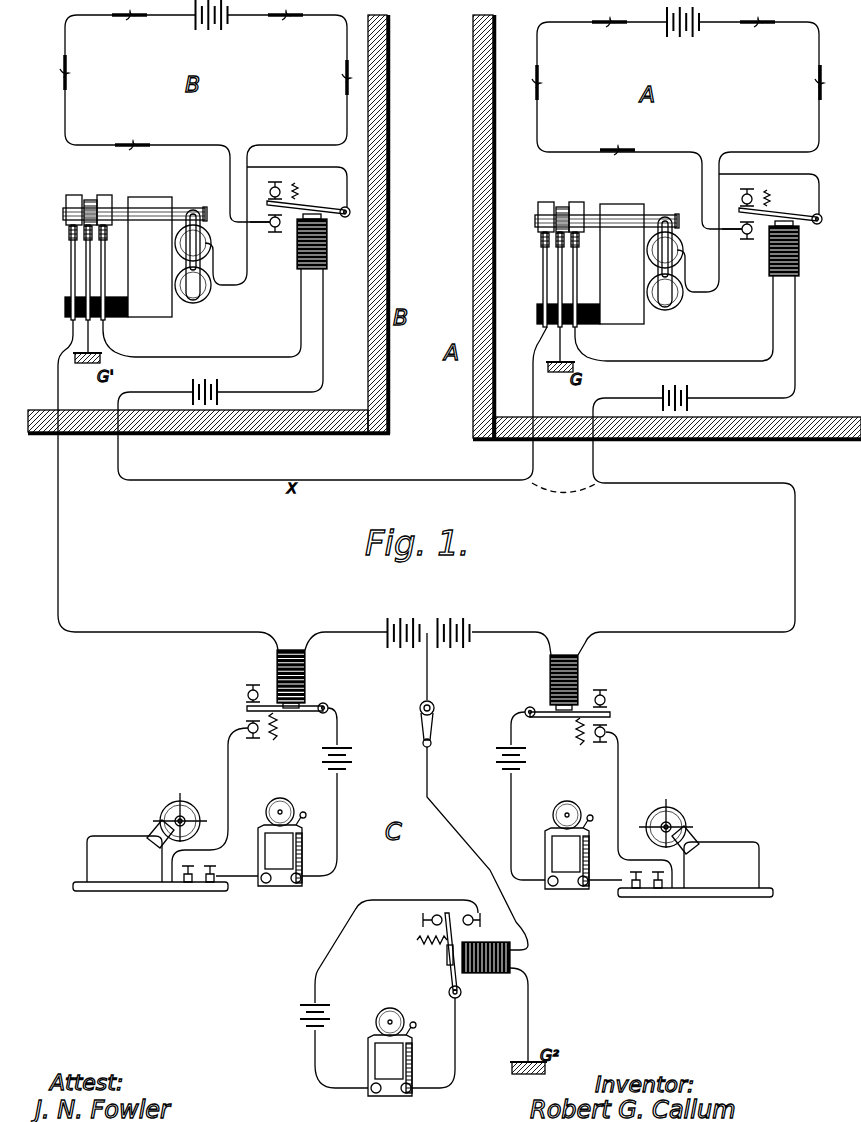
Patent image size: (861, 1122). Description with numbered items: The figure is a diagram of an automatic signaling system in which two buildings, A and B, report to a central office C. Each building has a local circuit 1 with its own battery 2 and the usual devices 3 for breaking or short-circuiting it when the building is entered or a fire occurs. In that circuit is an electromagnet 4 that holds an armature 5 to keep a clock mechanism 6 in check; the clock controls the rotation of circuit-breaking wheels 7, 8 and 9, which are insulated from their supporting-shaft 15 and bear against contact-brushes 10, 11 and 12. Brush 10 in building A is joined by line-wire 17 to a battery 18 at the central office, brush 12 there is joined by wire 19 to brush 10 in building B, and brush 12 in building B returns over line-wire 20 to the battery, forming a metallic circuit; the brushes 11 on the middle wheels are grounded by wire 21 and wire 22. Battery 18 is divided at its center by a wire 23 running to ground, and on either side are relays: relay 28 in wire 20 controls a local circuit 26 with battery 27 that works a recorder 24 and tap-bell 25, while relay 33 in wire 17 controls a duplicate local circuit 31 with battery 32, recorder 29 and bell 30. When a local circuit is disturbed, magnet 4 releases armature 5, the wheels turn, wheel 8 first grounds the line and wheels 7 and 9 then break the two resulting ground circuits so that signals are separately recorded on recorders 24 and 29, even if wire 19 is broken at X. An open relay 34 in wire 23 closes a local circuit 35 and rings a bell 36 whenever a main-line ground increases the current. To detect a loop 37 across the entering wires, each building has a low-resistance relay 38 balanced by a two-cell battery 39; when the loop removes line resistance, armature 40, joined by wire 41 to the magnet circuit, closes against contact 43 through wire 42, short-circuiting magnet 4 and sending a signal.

The local circuit 1 is at (442, 153).
The battery 2 is at (448, 31).
The devices for short-circuiting or breaking the circuit 3 is at (442, 77).
The electromagnet 4 is at (432, 258).
The armature 5 is at (193, 300).
The clock mechanism 6 is at (354, 260).
The circuit-breaking wheel 7 is at (105, 195).
The circuit-breaking wheel 8 is at (90, 200).
The circuit-breaking wheel 9 is at (77, 195).
The contact-brush 10 is at (101, 257).
The contact-brush 11 is at (86, 274).
The contact-brush 12 is at (71, 288).
The supporting-shaft 15 is at (63, 214).
The line-wire 17 is at (633, 465).
The battery 18 is at (429, 622).
The wire 19 is at (537, 393).
The line-wire 20 is at (58, 390).
The wire 21 is at (562, 348).
The wire 22 is at (90, 336).
The wire 23 is at (432, 678).
The recorder 24 is at (150, 842).
The single tap-bell 25 is at (282, 830).
The local circuit 26 is at (244, 897).
The battery 27 is at (349, 760).
The relay 28 is at (289, 695).
The recorder 29 is at (695, 848).
The bell 30 is at (569, 835).
The local circuit 31 is at (511, 800).
The battery 32 is at (523, 758).
The relay 33 is at (566, 700).
The open relay 34 is at (505, 975).
The local circuit 35 is at (336, 955).
The bell 36 is at (392, 1041).
The loop 37 is at (564, 481).
The relay 38 is at (563, 245).
The two-cell battery 39 is at (440, 388).
The armature 40 is at (544, 203).
The wire 41 is at (533, 181).
The wire 42 is at (258, 224).
The contact 43 is at (281, 240).